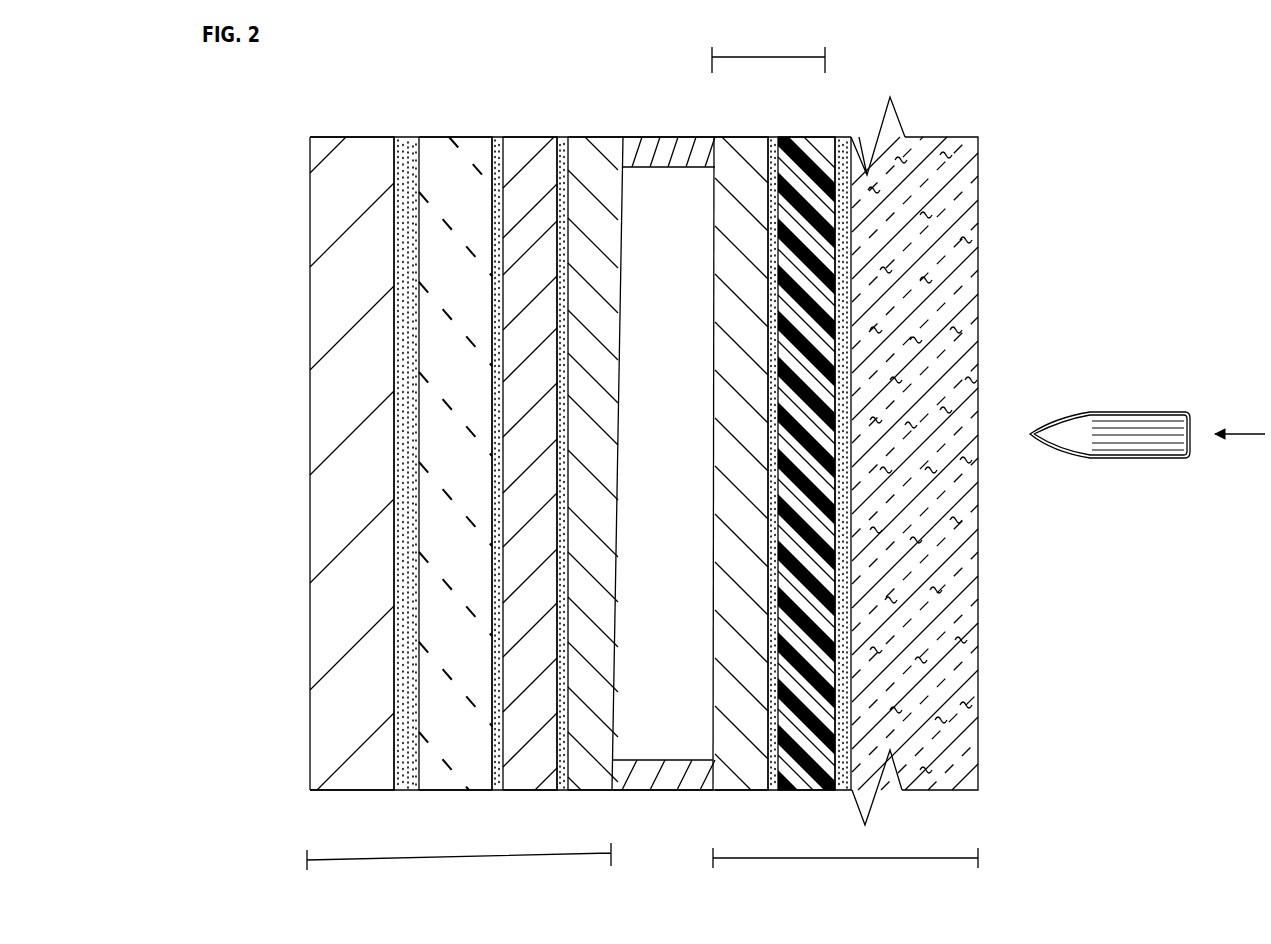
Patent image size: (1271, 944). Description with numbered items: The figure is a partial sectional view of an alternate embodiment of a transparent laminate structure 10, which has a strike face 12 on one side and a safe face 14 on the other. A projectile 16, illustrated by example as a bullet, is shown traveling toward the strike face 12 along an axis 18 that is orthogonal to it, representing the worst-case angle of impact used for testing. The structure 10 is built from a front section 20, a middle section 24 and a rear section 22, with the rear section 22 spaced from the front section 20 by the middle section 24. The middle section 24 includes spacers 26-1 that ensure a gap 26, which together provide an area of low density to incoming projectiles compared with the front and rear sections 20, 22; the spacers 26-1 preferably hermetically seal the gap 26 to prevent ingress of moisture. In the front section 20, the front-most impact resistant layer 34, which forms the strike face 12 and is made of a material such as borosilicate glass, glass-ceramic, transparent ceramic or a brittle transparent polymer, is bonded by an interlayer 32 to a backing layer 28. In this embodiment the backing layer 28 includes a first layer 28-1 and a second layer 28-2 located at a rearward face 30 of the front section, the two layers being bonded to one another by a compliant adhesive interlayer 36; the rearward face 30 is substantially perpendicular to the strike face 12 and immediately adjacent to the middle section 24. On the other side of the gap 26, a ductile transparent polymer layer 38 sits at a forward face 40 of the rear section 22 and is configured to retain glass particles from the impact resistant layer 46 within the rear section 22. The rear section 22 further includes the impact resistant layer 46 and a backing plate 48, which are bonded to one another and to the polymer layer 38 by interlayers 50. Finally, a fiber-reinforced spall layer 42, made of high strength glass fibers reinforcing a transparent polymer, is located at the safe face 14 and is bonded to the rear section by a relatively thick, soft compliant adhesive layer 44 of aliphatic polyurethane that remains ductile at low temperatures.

The transparent laminate structure 10 is at (1070, 197).
The strike face 12 is at (983, 249).
The safe face 14 is at (306, 462).
The projectile 16 is at (1138, 410).
The axis 18 is at (1240, 440).
The front section 20 is at (854, 862).
The rear section 22 is at (460, 858).
The middle section 24 is at (656, 810).
The gap 26 is at (667, 646).
The spacers 26-1 is at (667, 168).
The backing layer 28 is at (764, 56).
The first layer 28-1 is at (738, 137).
The second layer 28-2 is at (803, 137).
The rearward face 30 is at (711, 496).
The interlayer 32 is at (847, 790).
The impact resistant layer 34 is at (948, 137).
The compliant adhesive interlayer 36 is at (767, 792).
The polymer layer 38 is at (596, 137).
The forward face 40 is at (620, 520).
The fiber-reinforced spall layer 42 is at (344, 137).
The compliant adhesive layer 44 is at (407, 137).
The impact resistant layer 46 is at (530, 137).
The backing plate 48 is at (452, 137).
The interlayers 50 is at (495, 792).